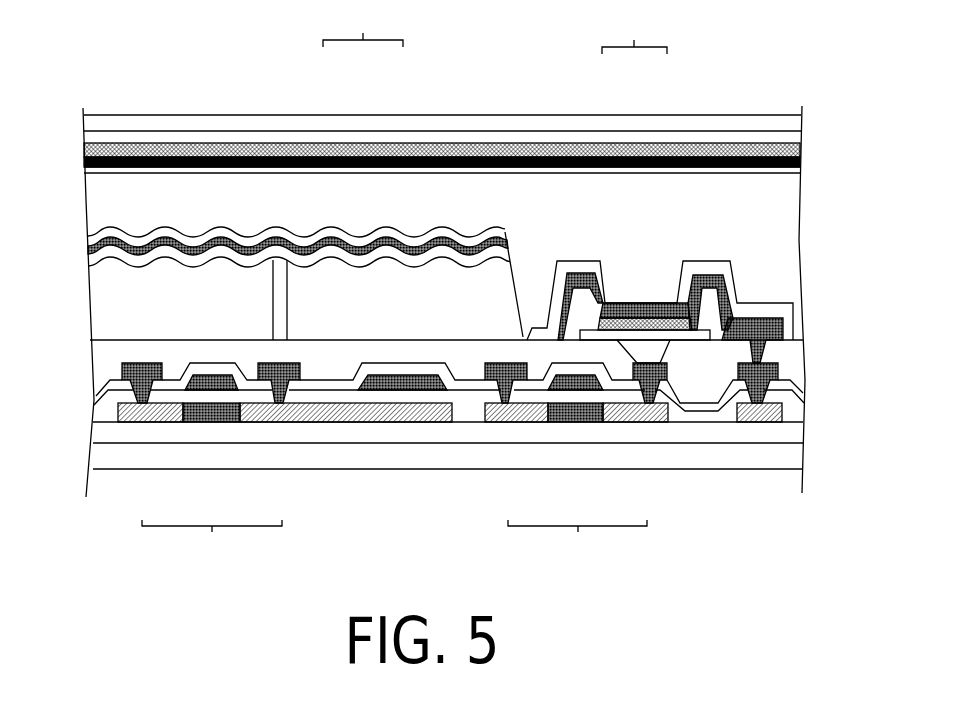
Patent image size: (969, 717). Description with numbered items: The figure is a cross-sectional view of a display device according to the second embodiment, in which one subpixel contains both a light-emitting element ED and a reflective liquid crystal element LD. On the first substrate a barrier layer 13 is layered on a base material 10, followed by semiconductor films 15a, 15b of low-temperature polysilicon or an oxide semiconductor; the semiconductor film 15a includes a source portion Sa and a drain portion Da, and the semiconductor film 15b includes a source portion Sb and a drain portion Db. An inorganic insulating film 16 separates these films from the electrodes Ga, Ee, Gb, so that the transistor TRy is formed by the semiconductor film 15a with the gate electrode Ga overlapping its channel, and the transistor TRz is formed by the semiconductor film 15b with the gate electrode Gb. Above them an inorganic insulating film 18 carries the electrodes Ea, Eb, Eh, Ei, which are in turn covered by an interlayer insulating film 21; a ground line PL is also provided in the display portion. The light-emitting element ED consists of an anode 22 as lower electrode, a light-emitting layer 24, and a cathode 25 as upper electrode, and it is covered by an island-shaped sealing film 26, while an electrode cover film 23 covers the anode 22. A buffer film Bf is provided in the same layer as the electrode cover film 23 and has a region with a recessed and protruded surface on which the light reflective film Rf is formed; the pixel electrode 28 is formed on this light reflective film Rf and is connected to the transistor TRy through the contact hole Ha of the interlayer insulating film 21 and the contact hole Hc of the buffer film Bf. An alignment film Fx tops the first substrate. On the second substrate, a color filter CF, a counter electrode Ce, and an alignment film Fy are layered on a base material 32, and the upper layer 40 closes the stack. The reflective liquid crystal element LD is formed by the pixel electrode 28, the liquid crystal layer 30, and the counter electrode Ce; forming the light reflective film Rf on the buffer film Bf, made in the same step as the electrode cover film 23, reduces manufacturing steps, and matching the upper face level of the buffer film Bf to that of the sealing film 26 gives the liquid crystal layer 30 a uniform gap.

The upper substrate 40 is at (85, 121).
The base material 32 is at (85, 141).
The color filter CF is at (85, 150).
The counter electrode Ce is at (85, 162).
The pixel electrode 28 is at (367, 178).
The alignment film Fy is at (258, 172).
The reflective liquid crystal element LD is at (363, 28).
The liquid crystal layer 30 is at (274, 170).
The alignment film Fx is at (457, 228).
The light reflective film Rf is at (84, 262).
The buffer film Bf is at (92, 296).
The interlayer insulating film 21 is at (96, 350).
The inorganic insulating film 18 is at (96, 398).
The inorganic insulating film 16 is at (95, 414).
The barrier layer 13 is at (95, 434).
The base material 10 is at (95, 455).
The source portion Sa is at (143, 415).
The semiconductor film 15a is at (234, 425).
The drain portion Da is at (283, 415).
The electrode Ga is at (196, 383).
The electrode Ea is at (141, 373).
The electrode Eb is at (258, 363).
The contact hole Hc is at (286, 283).
The contact hole Ha is at (279, 349).
The electrode Ee is at (425, 383).
The transistor TRy is at (212, 541).
The drain portion Db is at (507, 413).
The semiconductor film 15b is at (596, 425).
The source portion Sb is at (642, 415).
The electrode Gb is at (558, 383).
The electrode Eh is at (663, 368).
The electrode Ei is at (736, 372).
The ground line PL is at (772, 417).
The transistor TRz is at (577, 541).
The electrode cover film 23 is at (580, 295).
The sealing film 26 is at (677, 290).
The light-emitting layer 24 is at (612, 310).
The cathode 25 is at (633, 325).
The anode 22 is at (652, 337).
The light-emitting element ED is at (634, 34).